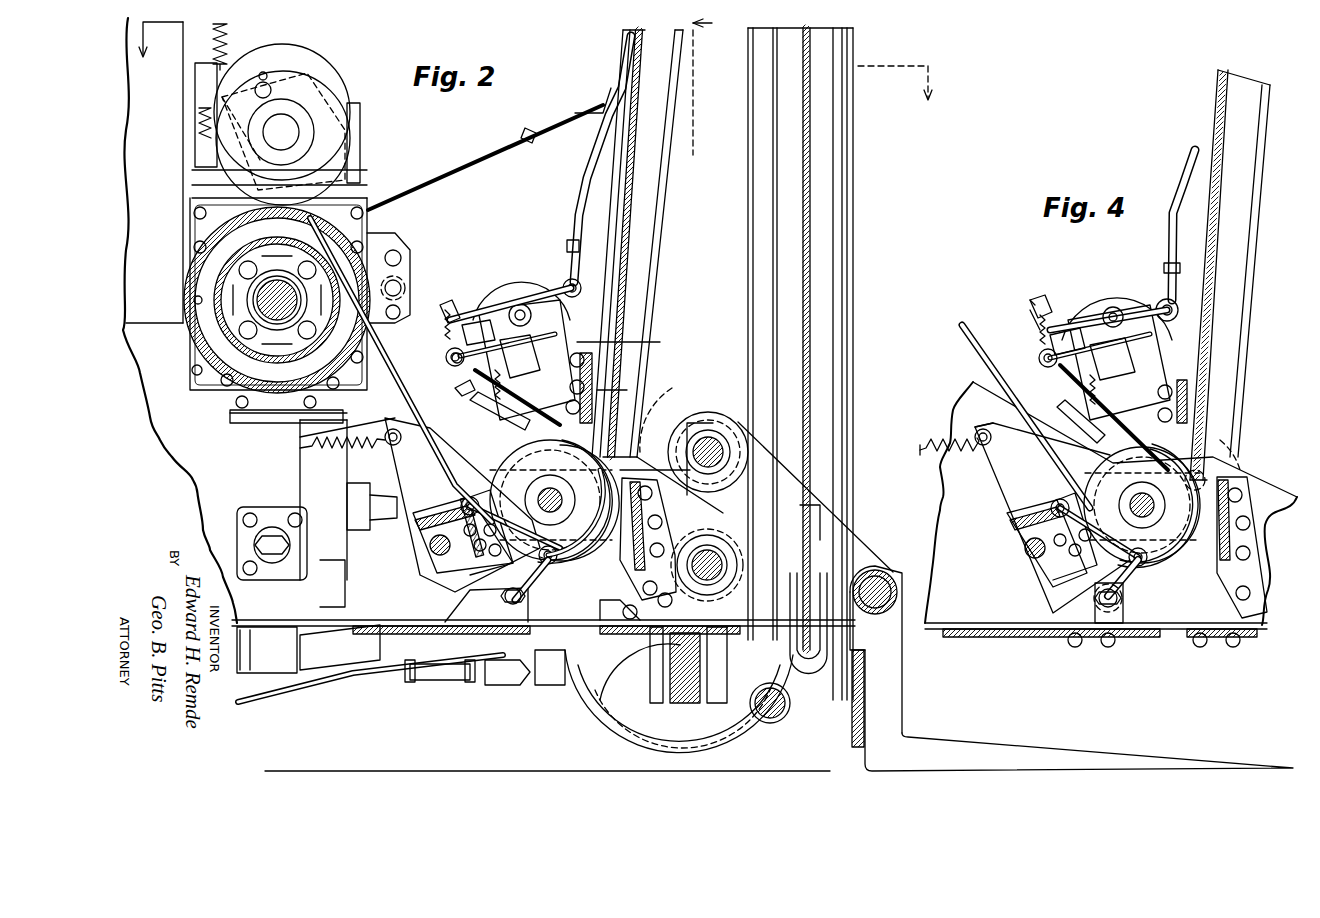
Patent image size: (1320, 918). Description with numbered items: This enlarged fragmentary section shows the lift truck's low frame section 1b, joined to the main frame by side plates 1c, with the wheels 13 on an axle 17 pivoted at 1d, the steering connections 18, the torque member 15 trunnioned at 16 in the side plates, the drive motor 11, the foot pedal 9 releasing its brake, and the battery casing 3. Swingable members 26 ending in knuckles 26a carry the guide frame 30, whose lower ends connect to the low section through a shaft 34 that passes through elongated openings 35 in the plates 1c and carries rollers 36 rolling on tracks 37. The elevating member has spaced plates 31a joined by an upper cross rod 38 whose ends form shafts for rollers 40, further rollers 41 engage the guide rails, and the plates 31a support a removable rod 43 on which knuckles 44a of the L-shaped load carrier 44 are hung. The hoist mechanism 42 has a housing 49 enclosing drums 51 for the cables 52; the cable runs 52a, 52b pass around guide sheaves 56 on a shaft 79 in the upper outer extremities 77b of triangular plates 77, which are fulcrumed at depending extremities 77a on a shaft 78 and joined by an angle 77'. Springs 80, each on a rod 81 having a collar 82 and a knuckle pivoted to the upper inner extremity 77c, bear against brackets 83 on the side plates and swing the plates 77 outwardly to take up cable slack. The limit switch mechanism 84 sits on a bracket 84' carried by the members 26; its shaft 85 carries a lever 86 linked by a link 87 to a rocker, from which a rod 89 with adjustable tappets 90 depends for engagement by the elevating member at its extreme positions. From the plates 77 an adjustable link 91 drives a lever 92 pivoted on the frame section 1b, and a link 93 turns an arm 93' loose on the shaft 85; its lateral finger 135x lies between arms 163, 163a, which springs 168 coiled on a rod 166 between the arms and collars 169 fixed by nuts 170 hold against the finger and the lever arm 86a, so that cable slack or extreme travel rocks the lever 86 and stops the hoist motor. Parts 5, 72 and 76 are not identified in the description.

In FIG. 2, the low frame section 1b is at (665, 700).
In FIG. 4, the low frame section 1b is at (1155, 635).
In FIG. 2, the side plates 1c is at (192, 481).
In FIG. 4, the side plates 1c is at (940, 527).
In FIG. 2, the axle pivot 1d is at (570, 700).
In FIG. 2, the sheet metal casing 3 is at (534, 83).
In FIG. 2, the section line 5- 5 is at (631, 330).
In FIG. 2, the foot pedal 9 is at (647, 604).
In FIG. 2, the motor 11 is at (345, 580).
In FIG. 2, the wheels 13 is at (600, 745).
In FIG. 2, the torque member 15 is at (300, 650).
In FIG. 2, the trunnion 16 is at (250, 540).
In FIG. 2, the axle 17 is at (650, 612).
In FIG. 2, the steering connections 18 is at (401, 679).
In FIG. 2, the swingable members 26 is at (650, 295).
In FIG. 4, the swingable members 26 is at (1245, 345).
In FIG. 2, the knuckle 26a is at (665, 432).
In FIG. 4, the knuckle 26a is at (1240, 460).
In FIG. 2, the guide frame 30 is at (858, 262).
In FIG. 2, the spaced plates 31a is at (845, 535).
In FIG. 2, the shaft 34 is at (730, 545).
In FIG. 2, the openings 35 is at (680, 488).
In FIG. 4, the openings 35 is at (1265, 485).
In FIG. 2, the rollers 36 is at (725, 560).
In FIG. 2, the tracks 37 is at (671, 517).
In FIG. 2, the upper cross rod 38 is at (712, 430).
In FIG. 2, the rollers 40 is at (700, 412).
In FIG. 2, the rollers 41 is at (768, 685).
In FIG. 2, the hoist mechanism 42 is at (300, 296).
In FIG. 2, the removable rod 43 is at (893, 610).
In FIG. 2, the load carrier 44 is at (1079, 710).
In FIG. 2, the knuckles 44a is at (882, 570).
In FIG. 2, the housing 49 is at (200, 345).
In FIG. 2, the drums 51 is at (195, 280).
In FIG. 2, the cables 52 is at (803, 140).
In FIG. 2, the cable run 52a is at (445, 365).
In FIG. 4, the cable run 52a is at (975, 355).
In FIG. 2, the cable run 52b is at (640, 265).
In FIG. 4, the cable run 52b is at (1225, 255).
In FIG. 2, the guide sheaves 56 is at (605, 530).
In FIG. 4, the guide sheaves 56 is at (1178, 560).
In FIG. 2, the link 72 is at (468, 398).
In FIG. 4, the link 72 is at (1065, 408).
In FIG. 2, the control rod 76 is at (485, 157).
In FIG. 2, the sheave carrying plates 77 is at (462, 505).
In FIG. 4, the sheave carrying plates 77 is at (1047, 518).
In FIG. 2, the depending extremity 77a is at (420, 560).
In FIG. 4, the depending extremity 77a is at (1010, 555).
In FIG. 2, the upper outer extremities 77b is at (575, 553).
In FIG. 2, the upper inner extremity 77c is at (418, 418).
In FIG. 4, the upper inner extremity 77c is at (990, 445).
In FIG. 2, the angle 77' is at (483, 605).
In FIG. 2, the shaft 78 is at (440, 570).
In FIG. 4, the shaft 78 is at (1040, 572).
In FIG. 2, the shaft 79 is at (510, 478).
In FIG. 4, the shaft 79 is at (1103, 480).
In FIG. 2, the springs 80 is at (342, 454).
In FIG. 4, the springs 80 is at (947, 437).
In FIG. 4, the rod 81 is at (922, 455).
In FIG. 2, the collar 82 is at (392, 428).
In FIG. 4, the collar 82 is at (983, 428).
In FIG. 2, the bracket 83 is at (300, 490).
In FIG. 2, the limit switch mechanism 84 is at (521, 341).
In FIG. 4, the limit switch mechanism 84 is at (1117, 339).
In FIG. 2, the bracket 84' is at (630, 343).
In FIG. 2, the shaft 85 is at (530, 300).
In FIG. 4, the shaft 85 is at (1158, 300).
In FIG. 2, the lever 86 is at (530, 320).
In FIG. 4, the lever 86 is at (1130, 325).
In FIG. 2, the lever arm 86a is at (478, 318).
In FIG. 4, the lever arm 86a is at (1070, 320).
In FIG. 2, the link 87 is at (573, 185).
In FIG. 4, the link 87 is at (1190, 158).
In FIG. 2, the rod 89 is at (845, 205).
In FIG. 2, the adjustable tappets 90 is at (835, 525).
In FIG. 2, the link 91 is at (468, 500).
In FIG. 4, the link 91 is at (1050, 503).
In FIG. 2, the lever 92 is at (548, 590).
In FIG. 4, the lever 92 is at (1135, 590).
In FIG. 2, the link 93 is at (570, 388).
In FIG. 4, the link 93 is at (1123, 417).
In FIG. 2, the arm 93' is at (440, 346).
In FIG. 4, the arm 93' is at (1034, 349).
In FIG. 2, the lateral finger 135x is at (441, 329).
In FIG. 2, the arm 163 is at (497, 300).
In FIG. 4, the arm 163 is at (1098, 300).
In FIG. 2, the arm 163a is at (520, 350).
In FIG. 4, the arm 163a is at (1115, 350).
In FIG. 2, the rod 166 is at (490, 378).
In FIG. 4, the rod 166 is at (1030, 300).
In FIG. 4, the spring 168 is at (1030, 315).
In FIG. 2, the collar 169 is at (445, 340).
In FIG. 4, the collar 169 is at (1030, 308).
In FIG. 2, the nut 170 is at (445, 318).
In FIG. 4, the nut 170 is at (1035, 300).